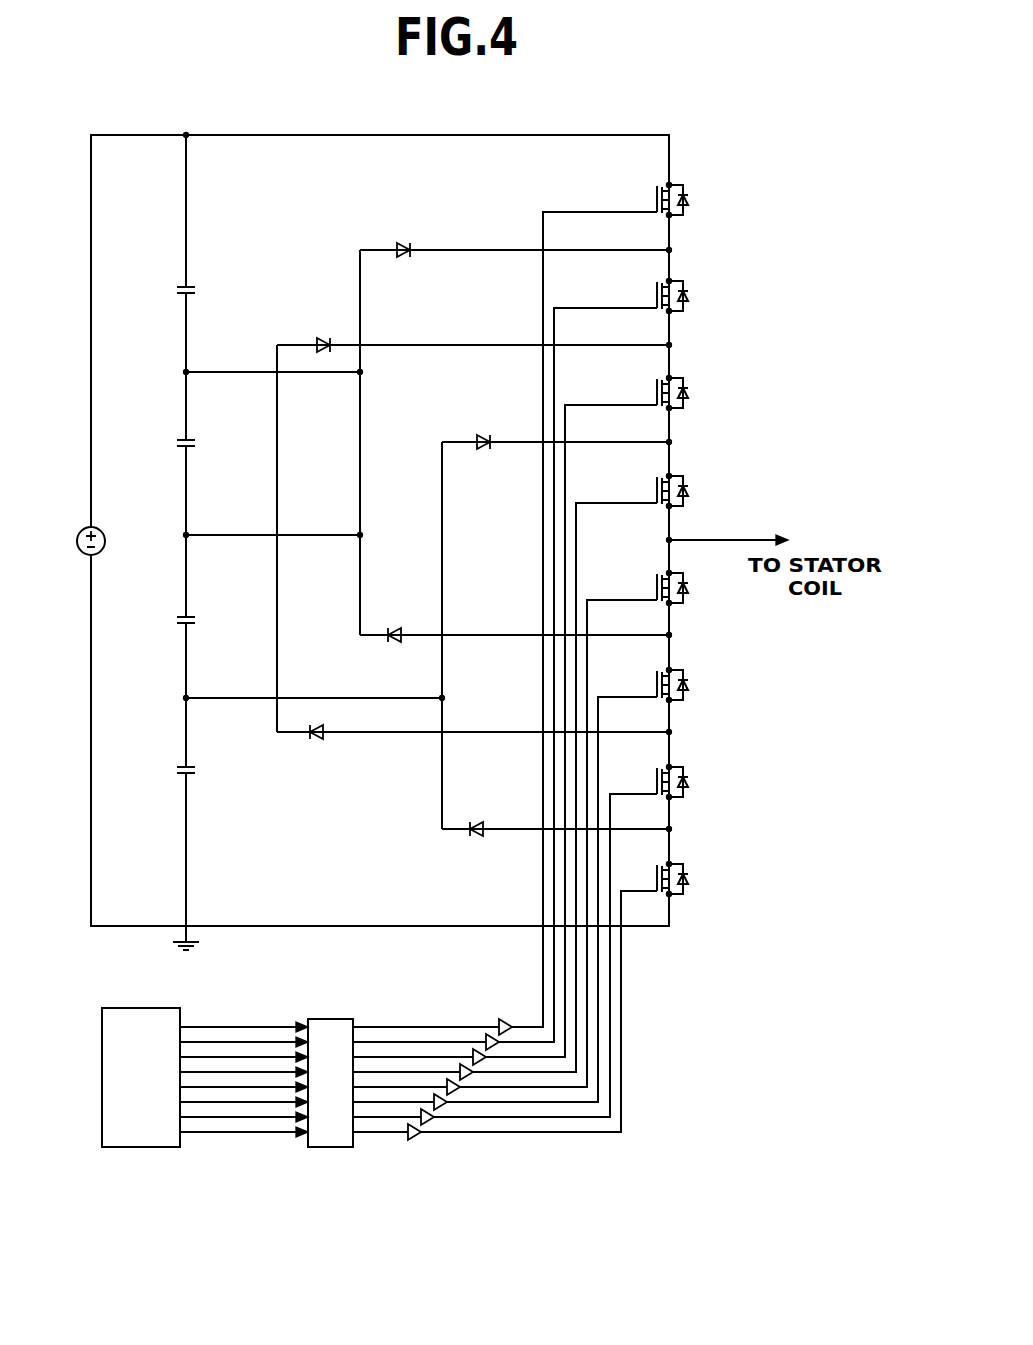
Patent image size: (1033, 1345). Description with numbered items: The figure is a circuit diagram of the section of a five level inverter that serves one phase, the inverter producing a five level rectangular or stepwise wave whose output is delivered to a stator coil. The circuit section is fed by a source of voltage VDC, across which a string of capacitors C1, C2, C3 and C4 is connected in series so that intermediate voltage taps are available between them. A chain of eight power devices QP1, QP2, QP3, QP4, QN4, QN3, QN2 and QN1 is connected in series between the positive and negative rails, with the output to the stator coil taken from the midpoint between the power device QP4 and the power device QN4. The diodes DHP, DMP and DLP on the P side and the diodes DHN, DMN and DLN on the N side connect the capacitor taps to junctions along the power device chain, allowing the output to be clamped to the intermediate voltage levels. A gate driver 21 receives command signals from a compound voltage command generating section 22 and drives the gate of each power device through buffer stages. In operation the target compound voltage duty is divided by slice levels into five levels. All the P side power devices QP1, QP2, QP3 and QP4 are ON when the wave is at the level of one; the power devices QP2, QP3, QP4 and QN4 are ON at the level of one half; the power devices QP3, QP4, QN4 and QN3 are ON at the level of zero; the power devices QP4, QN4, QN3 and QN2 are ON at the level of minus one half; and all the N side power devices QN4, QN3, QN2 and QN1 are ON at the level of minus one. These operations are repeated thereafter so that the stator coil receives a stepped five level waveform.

The gate driver 21 is at (390, 1157).
The compound voltage command generating section 22 is at (138, 1149).
The source of voltage VDC is at (62, 541).
The capacitor C1 is at (168, 290).
The capacitor C2 is at (168, 443).
The capacitor C3 is at (168, 620).
The capacitor C4 is at (168, 770).
The diode DHP is at (404, 236).
The diode DMP is at (323, 331).
The diode DLP is at (483, 429).
The diode DHN is at (397, 622).
The diode DMN is at (313, 747).
The diode DLN is at (476, 813).
The power device QP1 is at (697, 200).
The power device QP2 is at (697, 296).
The power device QP3 is at (697, 393).
The power device QP4 is at (697, 491).
The power device QN4 is at (697, 588).
The power device QN3 is at (697, 685).
The power device QN2 is at (697, 782).
The power device QN1 is at (697, 879).